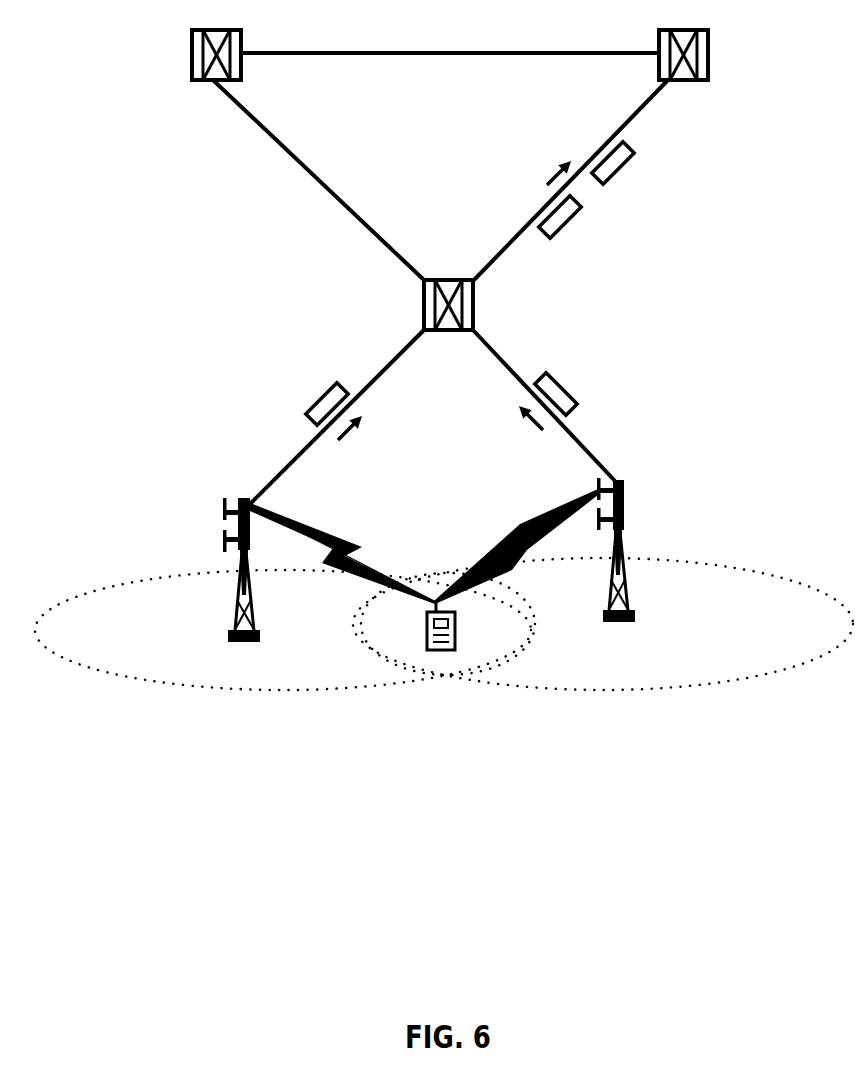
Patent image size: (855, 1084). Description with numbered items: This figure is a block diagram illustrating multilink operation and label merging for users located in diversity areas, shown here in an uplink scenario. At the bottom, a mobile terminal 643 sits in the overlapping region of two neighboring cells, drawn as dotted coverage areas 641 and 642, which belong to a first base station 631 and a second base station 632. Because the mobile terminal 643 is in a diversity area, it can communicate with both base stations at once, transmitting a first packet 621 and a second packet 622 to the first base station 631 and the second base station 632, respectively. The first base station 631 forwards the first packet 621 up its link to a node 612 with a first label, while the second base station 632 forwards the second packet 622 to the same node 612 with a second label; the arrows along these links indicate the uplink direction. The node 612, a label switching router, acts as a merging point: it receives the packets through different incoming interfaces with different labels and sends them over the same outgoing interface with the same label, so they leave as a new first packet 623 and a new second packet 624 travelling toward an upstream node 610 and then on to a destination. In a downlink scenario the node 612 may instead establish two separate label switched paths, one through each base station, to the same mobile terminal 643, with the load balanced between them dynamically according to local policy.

The upstream node 610 is at (707, 52).
The node 612 is at (423, 302).
The first packet 621 is at (318, 403).
The second packet 622 is at (565, 390).
The new first packet 623 is at (567, 218).
The new second packet 624 is at (620, 168).
The first base station 631 is at (223, 510).
The second base station 632 is at (622, 517).
The cell coverage area 641 is at (258, 690).
The cell coverage area 642 is at (705, 687).
The mobile terminal 643 is at (440, 648).